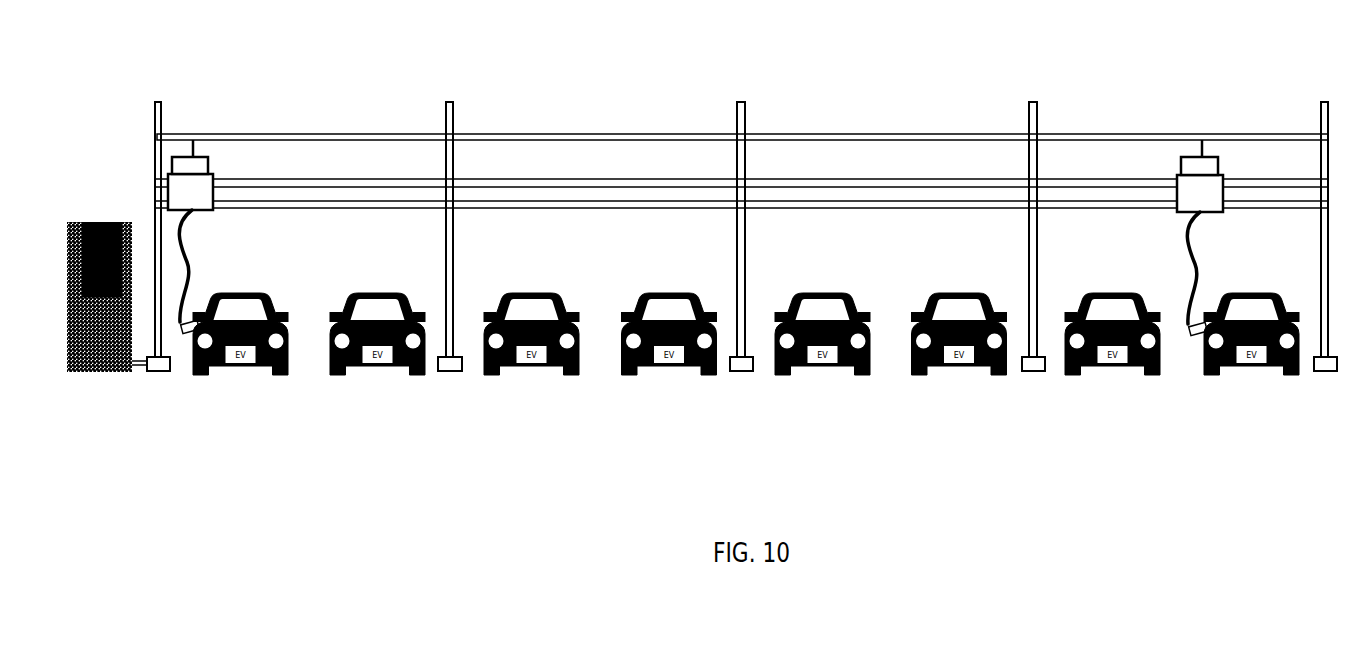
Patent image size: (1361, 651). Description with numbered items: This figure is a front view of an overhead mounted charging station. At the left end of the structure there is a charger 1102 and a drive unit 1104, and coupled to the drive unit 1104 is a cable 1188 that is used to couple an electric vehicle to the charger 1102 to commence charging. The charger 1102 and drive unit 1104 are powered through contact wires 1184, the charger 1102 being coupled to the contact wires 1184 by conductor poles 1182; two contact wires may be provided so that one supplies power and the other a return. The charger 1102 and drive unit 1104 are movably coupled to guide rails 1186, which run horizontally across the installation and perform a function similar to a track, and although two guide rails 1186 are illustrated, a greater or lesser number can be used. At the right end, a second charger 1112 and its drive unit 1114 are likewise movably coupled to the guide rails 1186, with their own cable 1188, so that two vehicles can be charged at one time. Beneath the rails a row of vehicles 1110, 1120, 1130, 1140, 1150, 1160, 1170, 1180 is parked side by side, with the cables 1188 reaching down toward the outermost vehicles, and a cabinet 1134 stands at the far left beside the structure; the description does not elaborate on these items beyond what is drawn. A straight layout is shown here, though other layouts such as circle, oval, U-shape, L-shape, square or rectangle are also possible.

The charger 1102 is at (212, 160).
The drive unit 1104 is at (215, 177).
The electric vehicle 1110 is at (250, 371).
The second charger 1112 is at (1222, 160).
The drive unit 1114 is at (1177, 176).
The electric vehicle 1120 is at (388, 371).
The electric vehicle 1130 is at (542, 371).
The power supply cabinet 1134 is at (107, 370).
The electric vehicle 1140 is at (679, 371).
The electric vehicle 1150 is at (832, 371).
The electric vehicle 1160 is at (969, 371).
The electric vehicle 1170 is at (1122, 371).
The electric vehicle 1180 is at (1262, 371).
The conductor poles 1182 is at (193, 152).
The contact wires 1184 is at (582, 135).
The guide rails 1186 is at (908, 200).
The cable 1188 is at (190, 266).